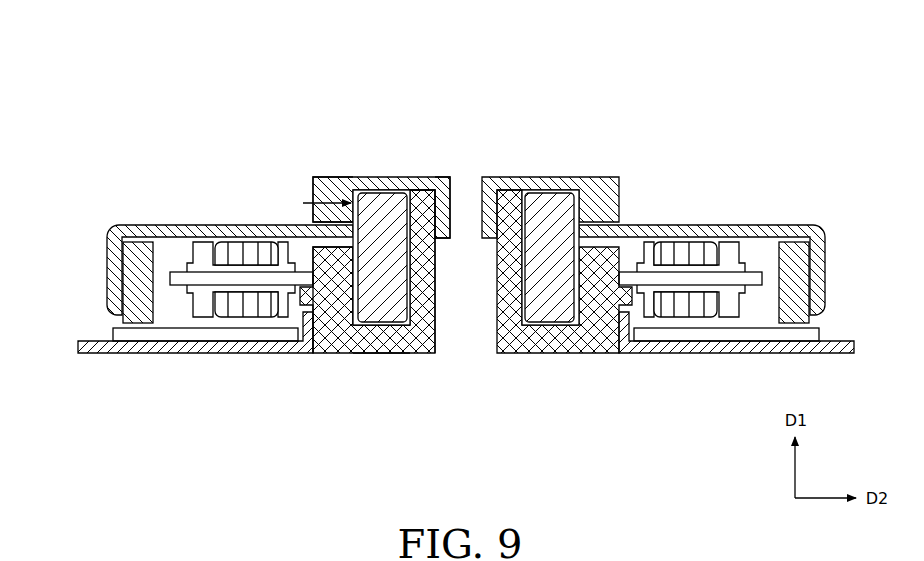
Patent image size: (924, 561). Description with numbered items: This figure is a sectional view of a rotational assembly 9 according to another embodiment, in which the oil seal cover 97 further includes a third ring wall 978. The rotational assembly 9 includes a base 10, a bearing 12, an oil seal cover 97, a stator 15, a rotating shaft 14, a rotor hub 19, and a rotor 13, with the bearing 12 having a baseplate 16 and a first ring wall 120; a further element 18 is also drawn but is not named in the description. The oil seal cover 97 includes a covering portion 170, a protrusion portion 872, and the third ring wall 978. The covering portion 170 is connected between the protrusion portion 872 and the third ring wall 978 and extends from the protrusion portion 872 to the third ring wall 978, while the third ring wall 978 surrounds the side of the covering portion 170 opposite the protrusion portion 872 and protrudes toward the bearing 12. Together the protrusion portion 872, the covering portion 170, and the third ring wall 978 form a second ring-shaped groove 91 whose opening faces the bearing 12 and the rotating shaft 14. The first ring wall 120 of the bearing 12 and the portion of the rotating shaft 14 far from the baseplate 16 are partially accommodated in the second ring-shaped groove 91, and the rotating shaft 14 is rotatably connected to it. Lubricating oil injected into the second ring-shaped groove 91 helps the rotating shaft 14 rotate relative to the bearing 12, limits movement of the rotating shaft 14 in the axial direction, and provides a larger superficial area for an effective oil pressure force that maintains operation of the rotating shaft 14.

The rotational assembly 9 is at (51, 44).
The base 10 is at (243, 350).
The bearing 12 is at (442, 413).
The rotor 13 is at (137, 258).
The rotating shaft 14 is at (387, 274).
The stator 15 is at (242, 250).
The baseplate 16 is at (374, 335).
The support 18 is at (332, 305).
The rotor hub 19 is at (276, 232).
The second ring-shaped groove 91 is at (303, 203).
The oil seal cover 97 is at (322, 97).
The first ring wall 120 is at (419, 327).
The covering portion 170 is at (375, 185).
The protrusion portion 872 is at (447, 195).
The third ring wall 978 is at (333, 190).